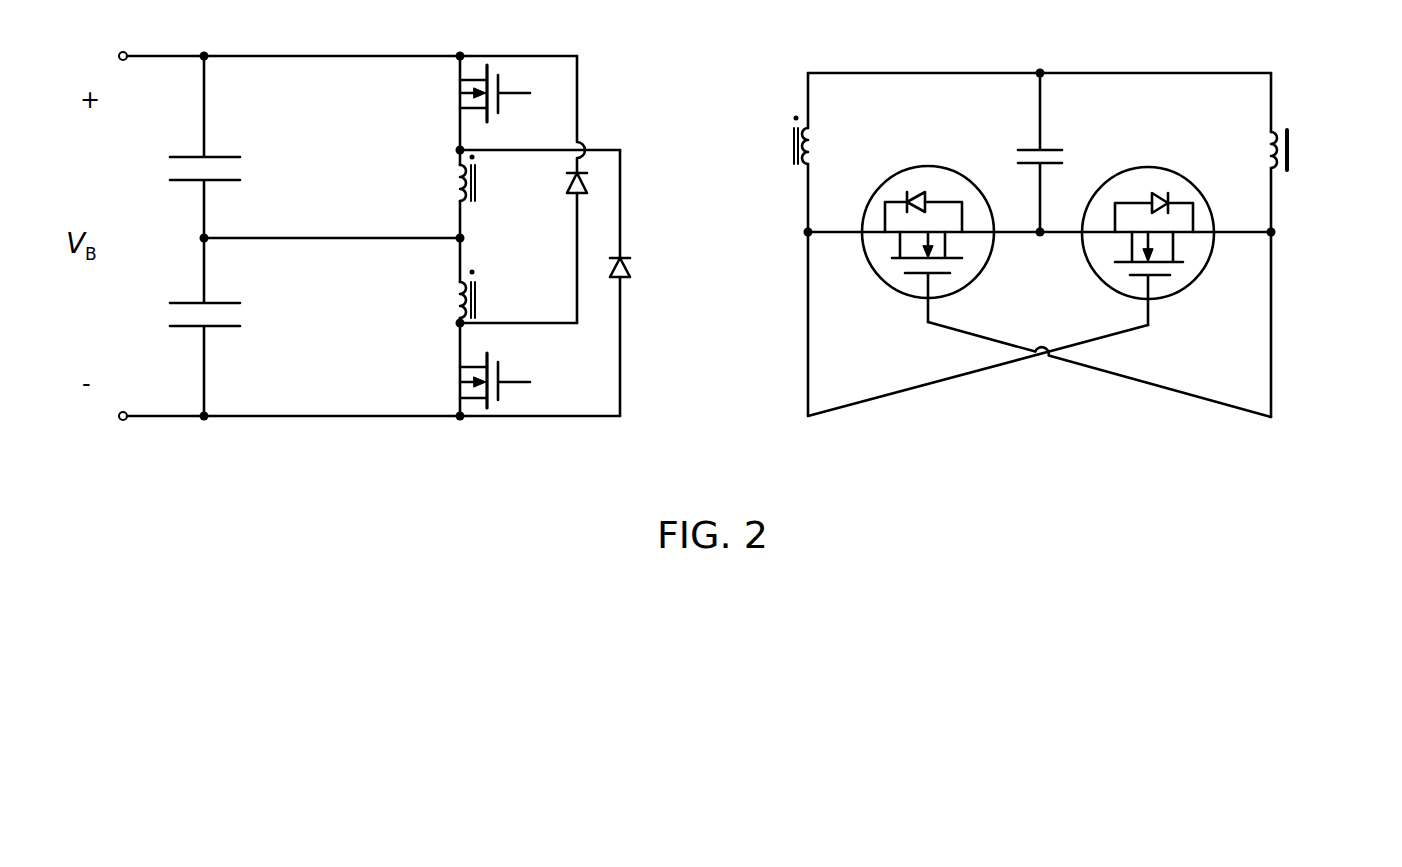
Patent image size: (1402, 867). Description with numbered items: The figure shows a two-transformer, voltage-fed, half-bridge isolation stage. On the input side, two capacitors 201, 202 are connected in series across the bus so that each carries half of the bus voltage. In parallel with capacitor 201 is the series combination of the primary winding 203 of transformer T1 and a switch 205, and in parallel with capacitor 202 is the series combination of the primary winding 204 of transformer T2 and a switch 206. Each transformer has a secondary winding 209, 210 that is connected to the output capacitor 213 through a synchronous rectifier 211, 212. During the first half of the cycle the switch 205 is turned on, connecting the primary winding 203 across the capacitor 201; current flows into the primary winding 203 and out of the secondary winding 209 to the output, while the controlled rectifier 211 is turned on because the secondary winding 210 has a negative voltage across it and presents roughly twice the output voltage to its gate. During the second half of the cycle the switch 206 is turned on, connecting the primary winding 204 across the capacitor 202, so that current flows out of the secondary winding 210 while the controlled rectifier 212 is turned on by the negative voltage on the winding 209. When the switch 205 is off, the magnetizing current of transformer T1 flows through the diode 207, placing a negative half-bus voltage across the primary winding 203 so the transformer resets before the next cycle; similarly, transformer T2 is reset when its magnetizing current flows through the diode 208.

The capacitor 201 is at (186, 155).
The capacitor 202 is at (186, 329).
The primary winding 203 is at (462, 185).
The primary winding 204 is at (462, 300).
The switch 205 is at (500, 80).
The switch 206 is at (500, 381).
The diode 207 is at (630, 280).
The diode 208 is at (574, 195).
The secondary winding 209 is at (806, 140).
The secondary winding 210 is at (1278, 148).
The synchronous rectifier 211 is at (889, 286).
The synchronous rectifier 212 is at (1183, 292).
The output capacitor 213 is at (1036, 165).